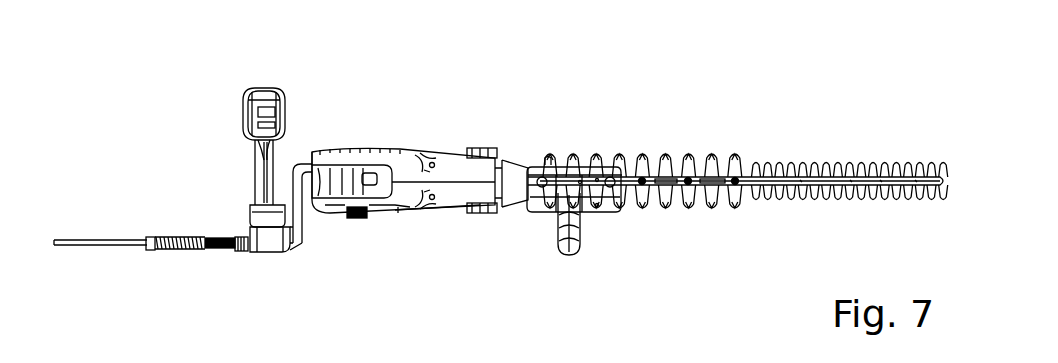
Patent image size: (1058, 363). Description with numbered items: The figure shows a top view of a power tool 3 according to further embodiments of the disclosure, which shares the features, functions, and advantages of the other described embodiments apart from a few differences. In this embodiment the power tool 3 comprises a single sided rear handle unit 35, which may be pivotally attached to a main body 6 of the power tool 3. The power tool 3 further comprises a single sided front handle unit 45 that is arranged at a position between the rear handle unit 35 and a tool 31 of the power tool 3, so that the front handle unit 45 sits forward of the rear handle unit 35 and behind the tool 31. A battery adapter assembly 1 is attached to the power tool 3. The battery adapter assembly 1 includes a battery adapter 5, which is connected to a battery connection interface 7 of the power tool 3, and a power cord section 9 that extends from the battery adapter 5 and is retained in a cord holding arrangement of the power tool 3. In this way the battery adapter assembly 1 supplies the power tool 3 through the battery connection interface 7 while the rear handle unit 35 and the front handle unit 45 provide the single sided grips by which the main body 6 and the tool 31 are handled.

The battery adapter assembly 1 is at (318, 275).
The power tool 3 is at (174, 83).
The battery adapter 5 is at (357, 220).
The main body 6 is at (405, 168).
The battery connection interface 7 is at (393, 215).
The power cord section 9 is at (105, 240).
The tool 31 is at (777, 168).
The single sided rear handle unit 35 is at (260, 167).
The single sided front handle unit 45 is at (577, 240).